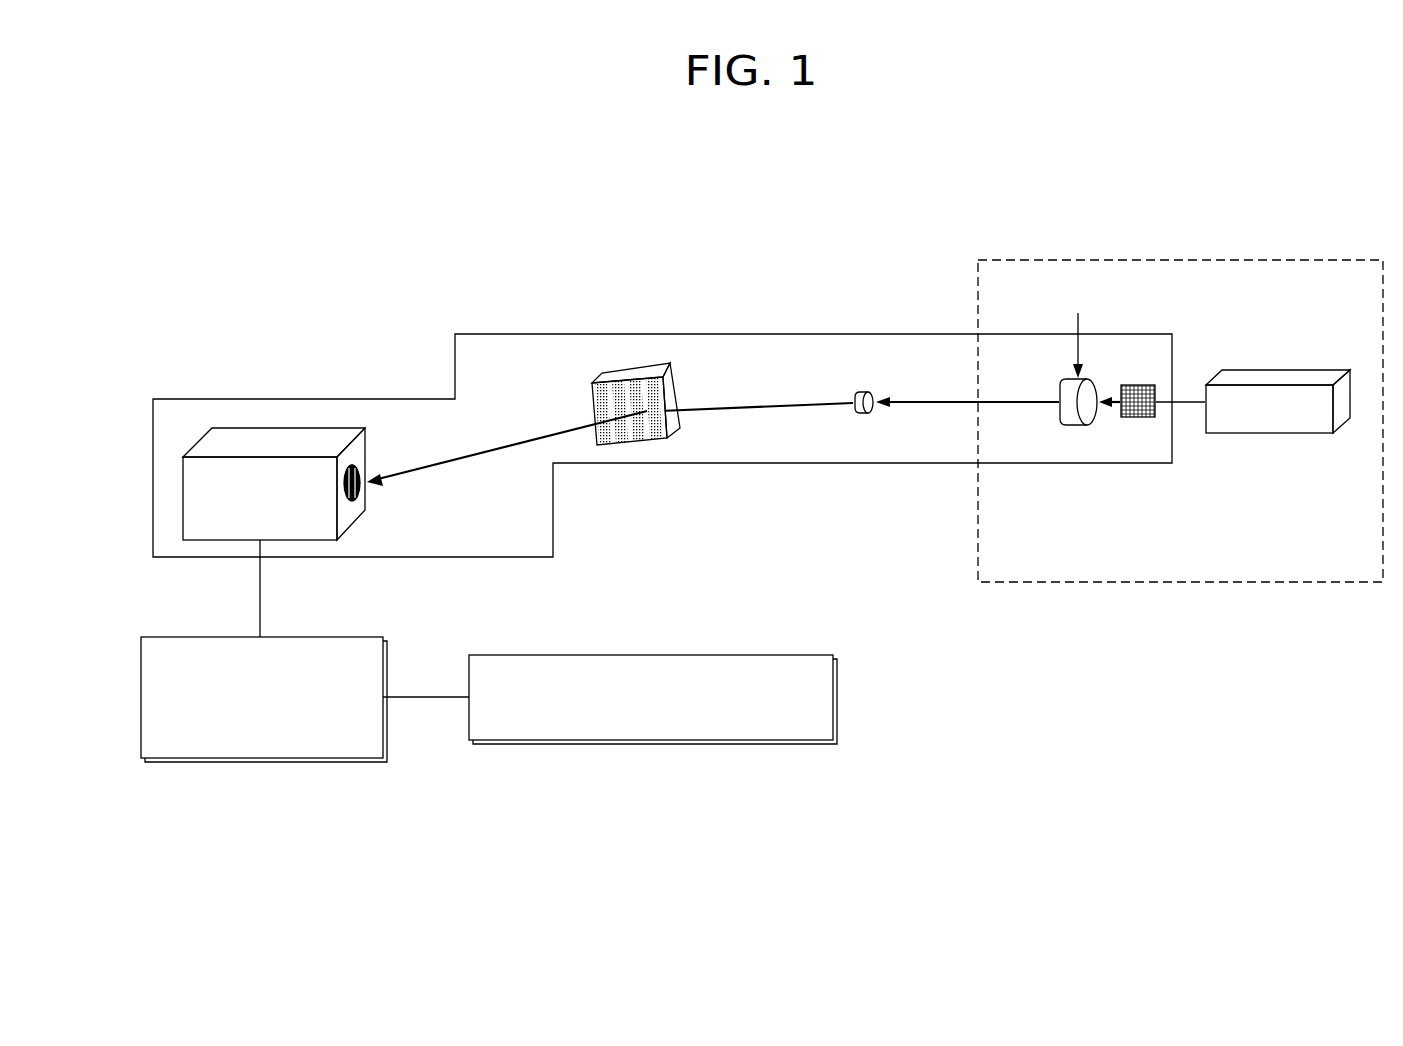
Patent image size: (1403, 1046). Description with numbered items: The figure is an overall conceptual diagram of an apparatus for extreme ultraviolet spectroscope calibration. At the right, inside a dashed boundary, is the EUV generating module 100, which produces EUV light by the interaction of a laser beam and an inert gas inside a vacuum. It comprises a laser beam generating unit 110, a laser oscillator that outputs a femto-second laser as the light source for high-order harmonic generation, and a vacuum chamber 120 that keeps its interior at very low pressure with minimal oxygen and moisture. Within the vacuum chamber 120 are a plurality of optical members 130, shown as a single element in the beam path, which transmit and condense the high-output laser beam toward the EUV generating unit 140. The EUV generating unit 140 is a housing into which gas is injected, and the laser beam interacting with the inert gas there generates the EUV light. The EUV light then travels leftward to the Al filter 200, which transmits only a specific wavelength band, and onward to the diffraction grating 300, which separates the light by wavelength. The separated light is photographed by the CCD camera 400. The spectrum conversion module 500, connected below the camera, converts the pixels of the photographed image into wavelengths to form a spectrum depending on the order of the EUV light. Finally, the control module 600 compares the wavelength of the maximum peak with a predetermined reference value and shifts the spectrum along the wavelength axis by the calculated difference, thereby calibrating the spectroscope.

The EUV generating module 100 is at (1190, 258).
The laser beam generating unit 110 is at (1272, 433).
The vacuum chamber 120 is at (1117, 463).
The optical members 130 is at (1138, 418).
The EUV generating unit 140 is at (1077, 427).
The Al filter 200 is at (862, 390).
The diffraction grating 300 is at (637, 372).
The CCD camera 400 is at (277, 440).
The spectrum conversion module 500 is at (258, 762).
The control module 600 is at (650, 744).